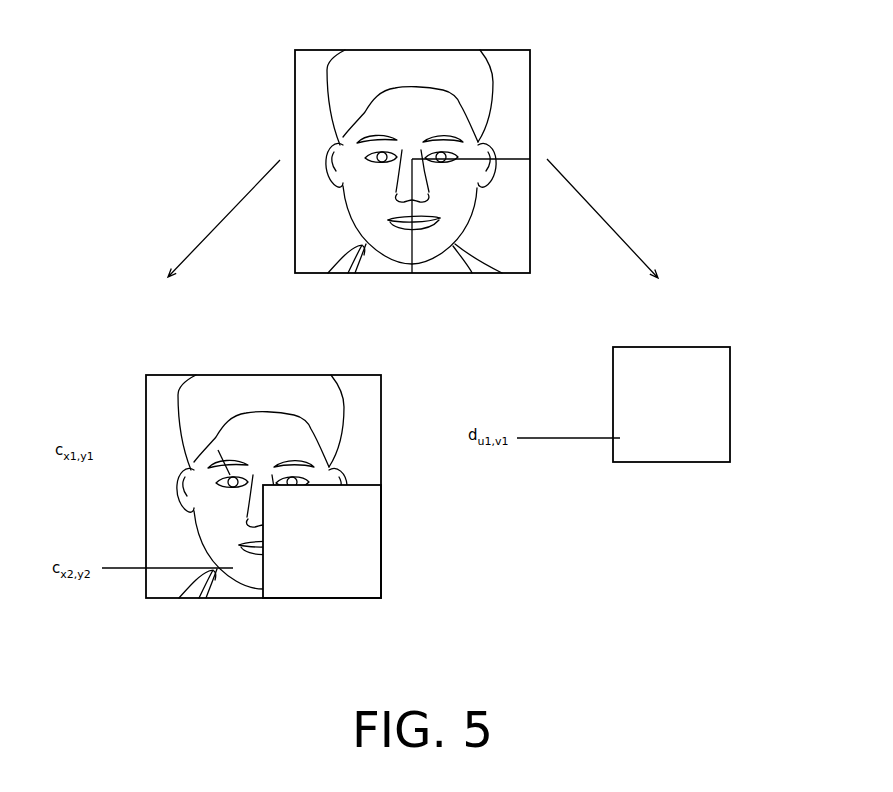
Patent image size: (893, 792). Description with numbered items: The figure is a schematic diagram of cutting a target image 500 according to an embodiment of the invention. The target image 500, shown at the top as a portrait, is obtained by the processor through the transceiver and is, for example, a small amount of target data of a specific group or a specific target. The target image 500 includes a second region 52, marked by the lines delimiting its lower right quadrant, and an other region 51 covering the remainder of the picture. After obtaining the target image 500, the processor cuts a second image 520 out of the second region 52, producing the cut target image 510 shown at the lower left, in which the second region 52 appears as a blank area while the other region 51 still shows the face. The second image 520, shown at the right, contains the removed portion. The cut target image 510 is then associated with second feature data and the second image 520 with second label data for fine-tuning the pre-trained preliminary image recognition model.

The other region 51 is at (496, 50).
The second region 52 is at (462, 274).
The target image 500 is at (583, 298).
The cut target image 510 is at (423, 635).
The second image 520 is at (740, 506).